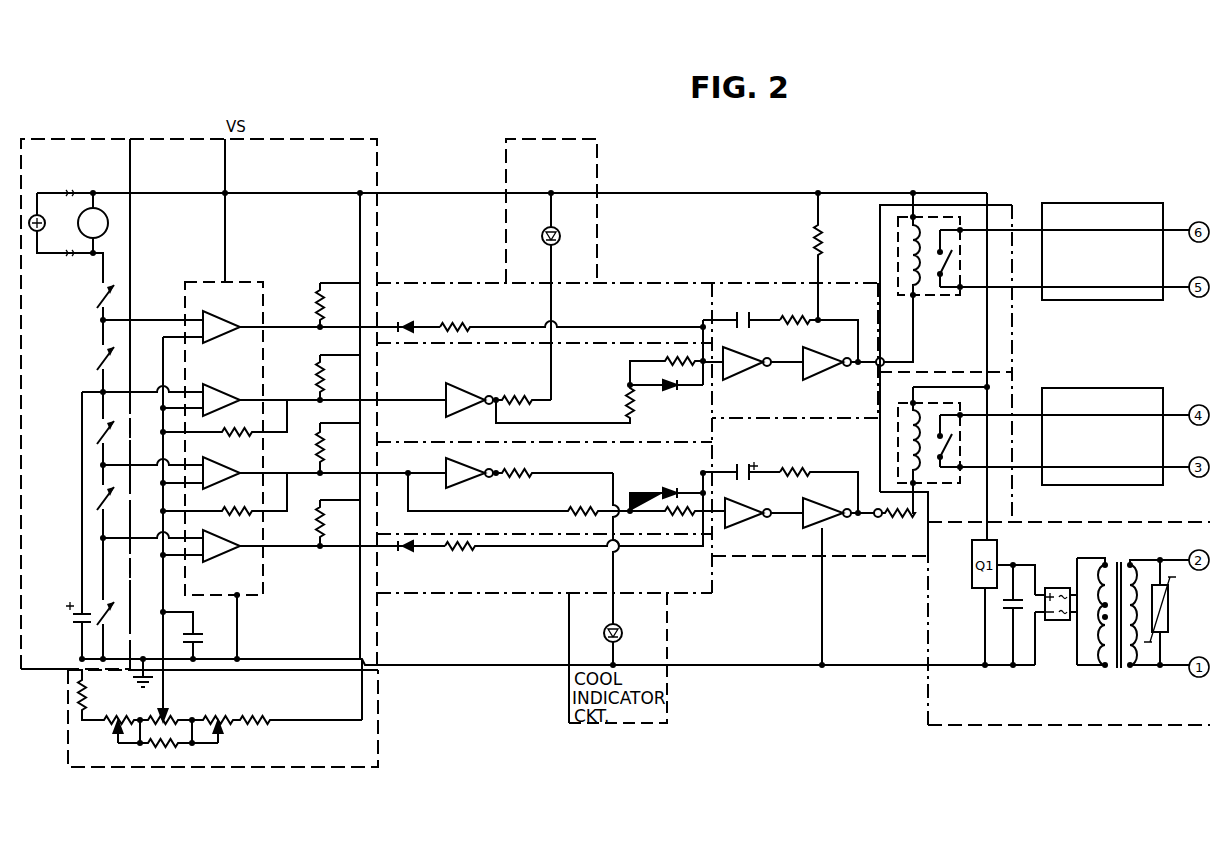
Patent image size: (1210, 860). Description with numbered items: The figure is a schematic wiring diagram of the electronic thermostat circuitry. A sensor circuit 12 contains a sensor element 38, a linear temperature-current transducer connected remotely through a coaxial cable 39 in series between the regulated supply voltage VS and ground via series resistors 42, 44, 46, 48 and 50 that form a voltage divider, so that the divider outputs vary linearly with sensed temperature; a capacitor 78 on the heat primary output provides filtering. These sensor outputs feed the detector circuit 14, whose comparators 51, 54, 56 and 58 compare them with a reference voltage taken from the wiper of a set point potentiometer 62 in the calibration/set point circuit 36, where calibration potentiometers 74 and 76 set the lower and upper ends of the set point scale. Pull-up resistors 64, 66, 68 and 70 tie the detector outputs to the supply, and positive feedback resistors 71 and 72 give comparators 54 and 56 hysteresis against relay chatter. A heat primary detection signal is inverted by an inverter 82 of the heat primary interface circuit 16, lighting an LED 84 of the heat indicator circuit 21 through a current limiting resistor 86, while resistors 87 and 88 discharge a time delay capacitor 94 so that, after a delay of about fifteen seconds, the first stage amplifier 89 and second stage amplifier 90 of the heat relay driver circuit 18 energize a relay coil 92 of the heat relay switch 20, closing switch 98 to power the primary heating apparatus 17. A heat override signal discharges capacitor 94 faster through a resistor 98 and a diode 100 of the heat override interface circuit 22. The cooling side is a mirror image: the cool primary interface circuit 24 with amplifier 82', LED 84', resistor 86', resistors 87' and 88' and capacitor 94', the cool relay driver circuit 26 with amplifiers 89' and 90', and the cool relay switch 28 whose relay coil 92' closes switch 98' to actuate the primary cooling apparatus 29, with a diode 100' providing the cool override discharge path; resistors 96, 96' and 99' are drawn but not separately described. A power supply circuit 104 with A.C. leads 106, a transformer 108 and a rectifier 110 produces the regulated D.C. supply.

The sensor circuit 12 is at (62, 345).
The detector circuit 14 is at (310, 173).
The heat primary interface circuit 16 is at (683, 423).
The primary heating apparatus 17 is at (1106, 229).
The heat relay driver circuit 18 is at (857, 313).
The heat relay switch 20 is at (960, 361).
The heat indicator circuit 21 is at (585, 267).
The heat override interface circuit 22 is at (640, 313).
The cool primary interface circuit 24 is at (666, 472).
The cool relay driver circuit 26 is at (837, 443).
The cool relay switch 28 is at (965, 515).
The primary cooling apparatus 29 is at (1106, 414).
The calibration/set point circuit 36 is at (327, 754).
The sensor element 38 is at (33, 197).
The coaxial cable 39 is at (60, 260).
The series resistor 42 is at (94, 299).
The series resistor 44 is at (92, 364).
The series resistor 46 is at (96, 434).
The series resistor 48 is at (96, 496).
The series resistor 50 is at (98, 608).
The comparator circuit 51 is at (240, 312).
The comparator circuit 54 is at (238, 388).
The comparator circuit 56 is at (220, 459).
The comparator circuit 58 is at (222, 557).
The set point potentiometer 62 is at (166, 718).
The pull-up resistor 64 is at (316, 307).
The pull-up resistor 66 is at (316, 378).
The pull-up resistor 68 is at (314, 444).
The pull-up resistor 70 is at (316, 528).
The positive feedback resistor 71 is at (230, 418).
The positive feedback resistor 72 is at (246, 506).
The set point calibration potentiometer 74 is at (102, 731).
The set point calibration potentiometer 76 is at (217, 717).
The capacitor 78 is at (78, 626).
The inverter 82 is at (467, 387).
The amplifier 82' is at (484, 469).
The LED 84 is at (535, 296).
The LED 84' is at (656, 569).
The current limiting resistor 86 is at (522, 381).
The resistor 86' is at (553, 473).
The resistor 87 is at (565, 404).
The resistor 87' is at (519, 494).
The resistor 88 is at (648, 355).
The resistor 88' is at (677, 532).
The first stage amplifier 89 is at (753, 372).
The amplifier 89' is at (764, 523).
The second stage amplifier 90 is at (858, 346).
The amplifier 90' is at (859, 574).
The relay coil 92 is at (887, 256).
The relay coil 92' is at (912, 435).
The time delay capacitor 94 is at (741, 308).
The capacitor 94' is at (741, 458).
The resistor 96 is at (815, 325).
The resistor 96' is at (810, 476).
The switch 98 is at (815, 280).
The switch 98' is at (1065, 418).
The resistor 99' is at (574, 528).
The diode 100 is at (424, 315).
The diode 100' is at (417, 564).
The power supply circuit 104 is at (1172, 711).
The leads 106 is at (1168, 650).
The transformer 108 is at (1114, 562).
The rectifier 110 is at (1058, 588).